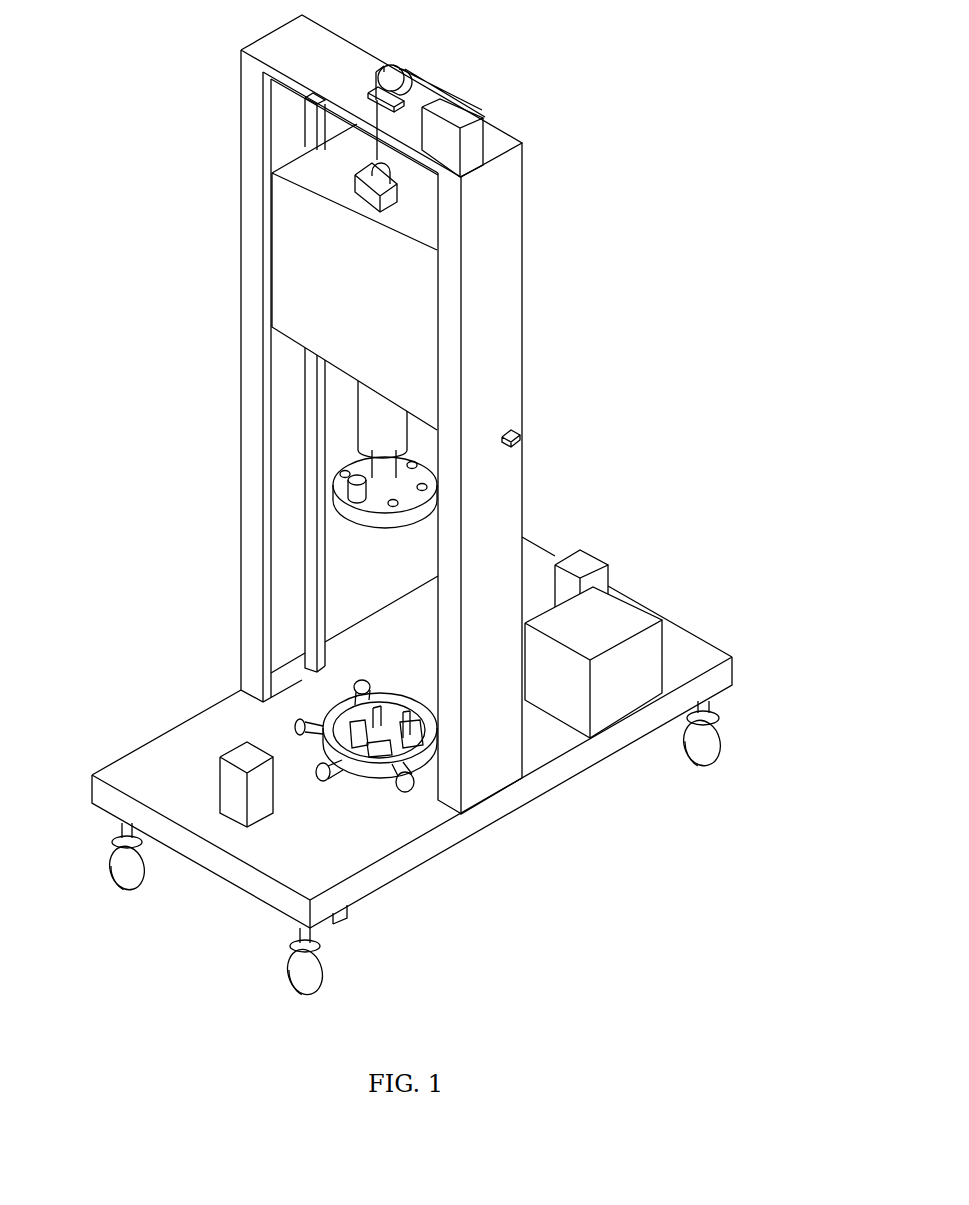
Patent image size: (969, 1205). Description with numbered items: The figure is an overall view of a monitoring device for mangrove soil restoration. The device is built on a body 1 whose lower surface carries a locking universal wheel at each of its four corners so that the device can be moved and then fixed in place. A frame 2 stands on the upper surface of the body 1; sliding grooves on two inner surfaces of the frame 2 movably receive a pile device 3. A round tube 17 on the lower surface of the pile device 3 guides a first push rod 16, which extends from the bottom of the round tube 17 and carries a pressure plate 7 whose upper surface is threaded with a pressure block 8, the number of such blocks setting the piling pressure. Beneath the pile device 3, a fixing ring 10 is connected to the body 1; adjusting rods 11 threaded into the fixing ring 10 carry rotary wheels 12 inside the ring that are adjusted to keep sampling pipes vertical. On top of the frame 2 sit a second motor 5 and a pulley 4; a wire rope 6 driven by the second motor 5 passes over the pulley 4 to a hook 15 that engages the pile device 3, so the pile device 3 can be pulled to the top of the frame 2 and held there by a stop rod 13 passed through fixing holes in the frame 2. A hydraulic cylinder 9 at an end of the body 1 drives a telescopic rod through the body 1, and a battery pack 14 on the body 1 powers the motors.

The body 1 is at (322, 848).
The frame 2 is at (490, 648).
The pile device 3 is at (320, 307).
The pulley 4 is at (396, 75).
The second motor 5 is at (455, 110).
The wire rope 6 is at (437, 80).
The pressure plate 7 is at (363, 518).
The pressure block 8 is at (352, 492).
The hydraulic cylinder 9 is at (224, 790).
The fixing ring 10 is at (297, 722).
The adjusting rod 11 is at (414, 790).
The rotary wheel 12 is at (333, 727).
The stop rod 13 is at (517, 432).
The battery pack 14 is at (640, 668).
The hook 15 is at (365, 187).
The first push rod 16 is at (385, 463).
The round tube 17 is at (378, 424).